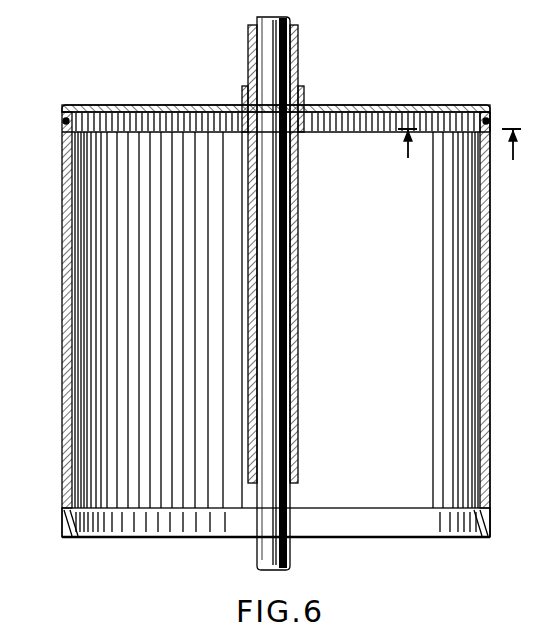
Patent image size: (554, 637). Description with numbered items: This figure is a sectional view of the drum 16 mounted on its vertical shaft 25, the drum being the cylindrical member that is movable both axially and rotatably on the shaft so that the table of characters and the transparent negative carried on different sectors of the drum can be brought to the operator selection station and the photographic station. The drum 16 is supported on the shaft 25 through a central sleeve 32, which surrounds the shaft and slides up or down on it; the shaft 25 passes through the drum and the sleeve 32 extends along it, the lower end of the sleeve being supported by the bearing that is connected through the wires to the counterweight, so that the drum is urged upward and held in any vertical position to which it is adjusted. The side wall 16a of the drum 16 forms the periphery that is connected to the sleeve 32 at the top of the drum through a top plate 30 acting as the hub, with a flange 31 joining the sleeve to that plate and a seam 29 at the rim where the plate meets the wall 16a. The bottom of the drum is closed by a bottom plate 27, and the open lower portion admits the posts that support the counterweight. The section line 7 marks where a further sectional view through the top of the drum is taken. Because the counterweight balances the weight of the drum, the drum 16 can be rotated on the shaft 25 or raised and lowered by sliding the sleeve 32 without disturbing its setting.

The drum 16 is at (52, 263).
The canister side wall 16a is at (484, 326).
The vertical shaft 25 is at (292, 55).
The bottom plate 27 is at (64, 540).
The seam joint 29 is at (491, 110).
The top plate 30 is at (180, 106).
The flange 31 is at (304, 102).
The sleeve 32 is at (299, 252).
The section line 7- 7 is at (457, 147).